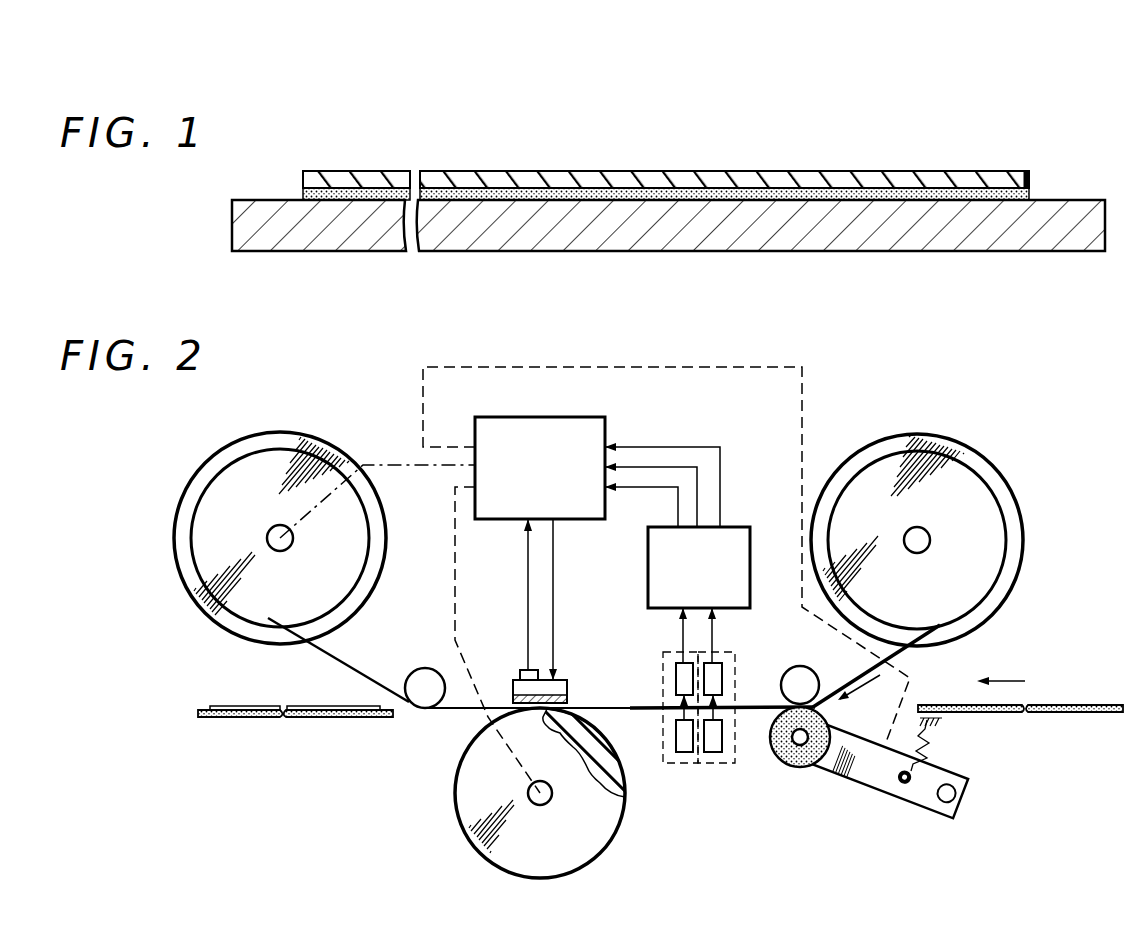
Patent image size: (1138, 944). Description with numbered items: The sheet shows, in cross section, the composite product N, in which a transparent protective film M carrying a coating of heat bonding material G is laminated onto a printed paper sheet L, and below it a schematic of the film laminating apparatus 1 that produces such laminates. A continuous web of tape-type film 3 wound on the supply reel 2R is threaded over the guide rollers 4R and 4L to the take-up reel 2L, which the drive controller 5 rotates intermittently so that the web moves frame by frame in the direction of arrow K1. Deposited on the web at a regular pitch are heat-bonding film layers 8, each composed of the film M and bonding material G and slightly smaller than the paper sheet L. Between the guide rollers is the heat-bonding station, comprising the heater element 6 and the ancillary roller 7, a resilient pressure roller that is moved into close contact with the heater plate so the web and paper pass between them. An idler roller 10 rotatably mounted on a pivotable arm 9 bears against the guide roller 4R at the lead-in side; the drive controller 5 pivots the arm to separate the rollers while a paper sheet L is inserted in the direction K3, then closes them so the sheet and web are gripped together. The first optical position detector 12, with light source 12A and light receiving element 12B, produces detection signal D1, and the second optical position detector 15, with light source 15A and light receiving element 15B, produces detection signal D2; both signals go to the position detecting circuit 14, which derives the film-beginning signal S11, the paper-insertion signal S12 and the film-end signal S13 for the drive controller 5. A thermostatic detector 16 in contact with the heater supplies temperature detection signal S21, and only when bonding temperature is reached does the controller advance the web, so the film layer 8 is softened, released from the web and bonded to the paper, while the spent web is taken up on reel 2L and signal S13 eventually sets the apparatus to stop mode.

In FIG. 2, the film laminating apparatus 1 is at (371, 405).
In FIG. 2, the take-up reel 2L is at (180, 507).
In FIG. 2, the supply reel 2R is at (1010, 487).
In FIG. 2, the film web 3 is at (341, 664).
In FIG. 2, the guide roller 4L is at (420, 668).
In FIG. 2, the guide roller 4R is at (782, 668).
In FIG. 2, the drive controller 5 is at (545, 417).
In FIG. 2, the heater element 6 is at (567, 692).
In FIG. 2, the ancillary roller 7 is at (615, 833).
In FIG. 1, the heat-bonding film layer 8 is at (666, 153).
In FIG. 2, the pivotable arm 9 is at (907, 802).
In FIG. 2, the idler roller 10 is at (800, 768).
In FIG. 2, the first optical position detector 12 is at (650, 722).
In FIG. 2, the light source 12A is at (680, 753).
In FIG. 2, the light receiving element 12B is at (676, 670).
In FIG. 2, the position detecting circuit 14 is at (737, 527).
In FIG. 2, the second optical position detector 15 is at (746, 722).
In FIG. 2, the light source 15A is at (710, 753).
In FIG. 2, the light receiving element 15B is at (722, 668).
In FIG. 2, the thermostatic detector 16 is at (520, 670).
In FIG. 1, the heat bonding material G is at (893, 195).
In FIG. 1, the transparent protective film M is at (666, 169).
In FIG. 2, the transparent protective film M is at (252, 707).
In FIG. 1, the composite product N is at (716, 154).
In FIG. 2, the composite product N is at (216, 676).
In FIG. 1, the paper sheet L is at (1066, 210).
In FIG. 2, the paper sheet L is at (232, 718).
In FIG. 2, the film feed direction K1 is at (860, 688).
In FIG. 2, the paper insertion direction K3 is at (1004, 680).
In FIG. 2, the film beginning detection signal S11 is at (628, 488).
In FIG. 2, the paper insertion detection signal S12 is at (637, 467).
In FIG. 2, the film end detection signal S13 is at (700, 447).
In FIG. 2, the temperature detection signal S21 is at (528, 583).
In FIG. 2, the detection signal D1 is at (680, 623).
In FIG. 2, the detection signal D2 is at (715, 625).